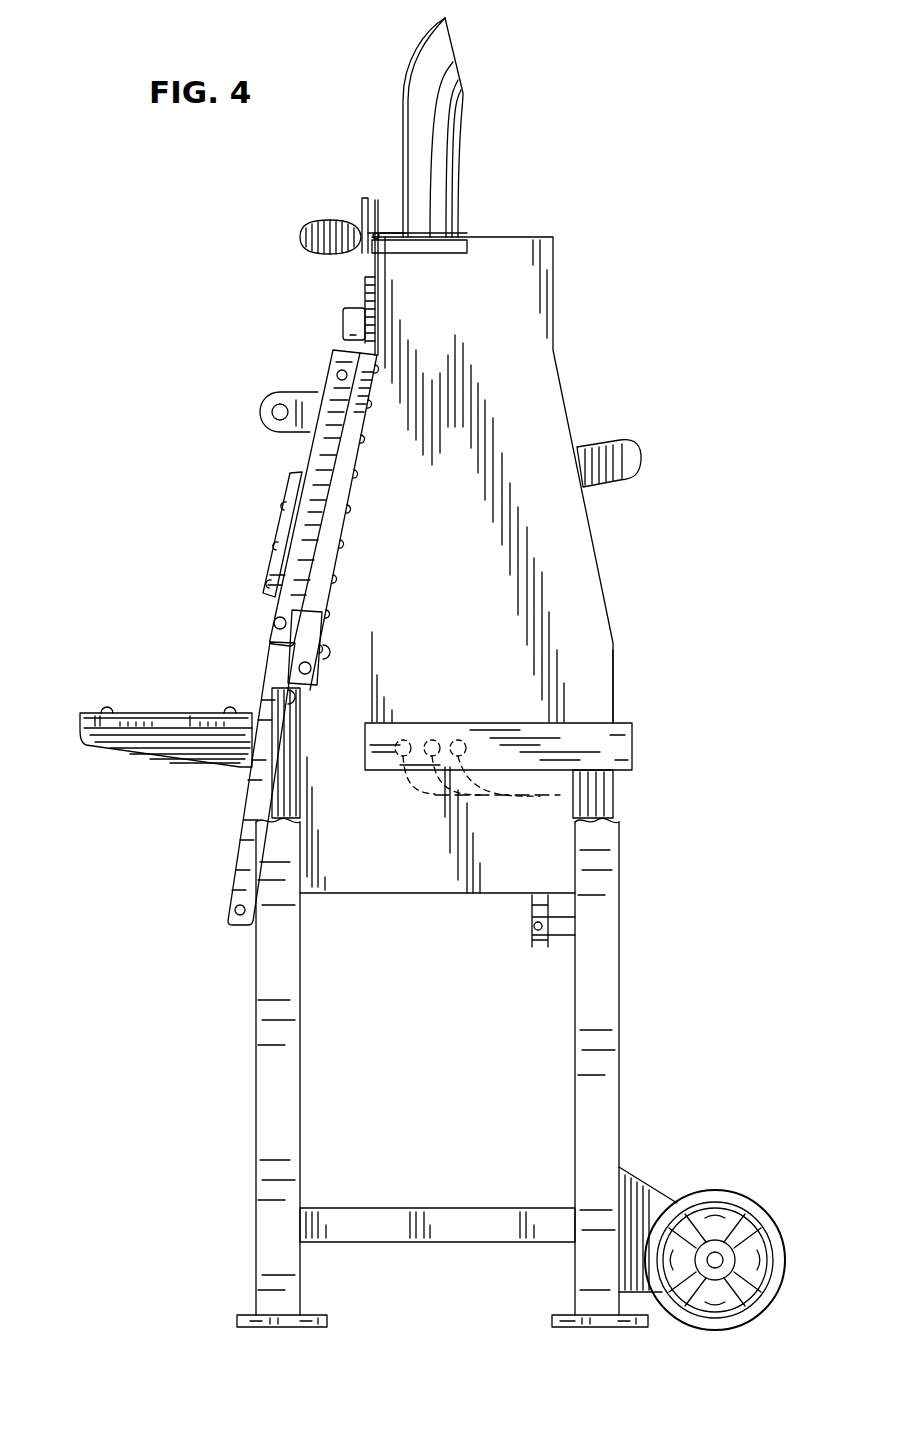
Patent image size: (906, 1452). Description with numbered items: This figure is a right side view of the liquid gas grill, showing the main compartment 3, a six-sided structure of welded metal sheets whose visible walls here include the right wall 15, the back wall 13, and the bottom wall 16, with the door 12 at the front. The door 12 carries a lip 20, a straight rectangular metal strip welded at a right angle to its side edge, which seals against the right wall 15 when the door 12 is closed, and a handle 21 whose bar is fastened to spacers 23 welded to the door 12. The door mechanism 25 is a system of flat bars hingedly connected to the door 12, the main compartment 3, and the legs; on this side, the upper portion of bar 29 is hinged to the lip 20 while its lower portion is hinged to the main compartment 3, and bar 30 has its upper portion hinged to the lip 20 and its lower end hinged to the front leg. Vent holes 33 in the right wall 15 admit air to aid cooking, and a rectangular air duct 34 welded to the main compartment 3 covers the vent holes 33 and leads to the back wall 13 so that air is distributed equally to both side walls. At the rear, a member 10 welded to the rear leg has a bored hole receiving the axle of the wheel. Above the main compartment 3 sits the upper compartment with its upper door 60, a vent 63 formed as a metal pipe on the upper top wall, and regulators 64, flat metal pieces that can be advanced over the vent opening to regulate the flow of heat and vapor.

The main compartment 3 is at (648, 632).
The member 10 is at (637, 1187).
The door 12 is at (297, 457).
The back wall 13 is at (616, 672).
The right wall 15 is at (518, 548).
The bottom wall 16 is at (352, 893).
The lip 20 is at (303, 503).
The handle 21 is at (284, 393).
The spacer 23 is at (336, 351).
The door mechanism 25 is at (324, 652).
The bar 29 is at (335, 463).
The bar 30 is at (250, 826).
The vent holes 33 is at (560, 795).
The air duct 34 is at (596, 750).
The upper door 60 is at (372, 265).
The vent 63 is at (415, 113).
The regulator 64 is at (343, 220).